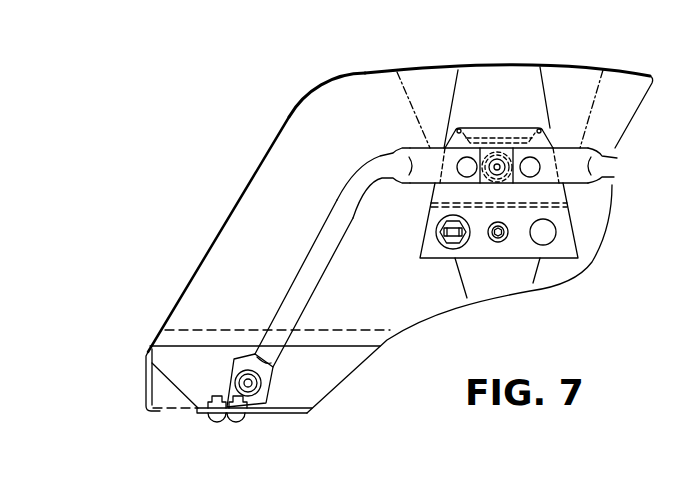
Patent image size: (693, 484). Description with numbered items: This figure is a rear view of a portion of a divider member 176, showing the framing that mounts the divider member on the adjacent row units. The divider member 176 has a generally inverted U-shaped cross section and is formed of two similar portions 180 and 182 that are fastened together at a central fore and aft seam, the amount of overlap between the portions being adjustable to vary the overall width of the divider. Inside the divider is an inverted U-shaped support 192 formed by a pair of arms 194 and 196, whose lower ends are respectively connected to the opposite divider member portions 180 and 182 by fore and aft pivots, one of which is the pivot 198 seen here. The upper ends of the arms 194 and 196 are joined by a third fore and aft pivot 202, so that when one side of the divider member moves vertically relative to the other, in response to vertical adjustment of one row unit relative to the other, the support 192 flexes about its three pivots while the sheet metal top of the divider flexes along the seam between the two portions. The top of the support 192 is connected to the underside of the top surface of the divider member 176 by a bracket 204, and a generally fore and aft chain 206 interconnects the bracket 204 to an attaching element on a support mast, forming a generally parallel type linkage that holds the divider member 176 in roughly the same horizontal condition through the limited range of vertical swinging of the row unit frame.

The divider member 176 is at (300, 92).
The divider member portion 180 is at (628, 76).
The divider member portion 182 is at (250, 187).
The support 192 is at (382, 148).
The arm 194 is at (310, 258).
The arm 196 is at (610, 173).
The pivot 198 is at (261, 383).
The pivot 202 is at (496, 163).
The bracket 204 is at (563, 223).
The chain 206 is at (457, 240).